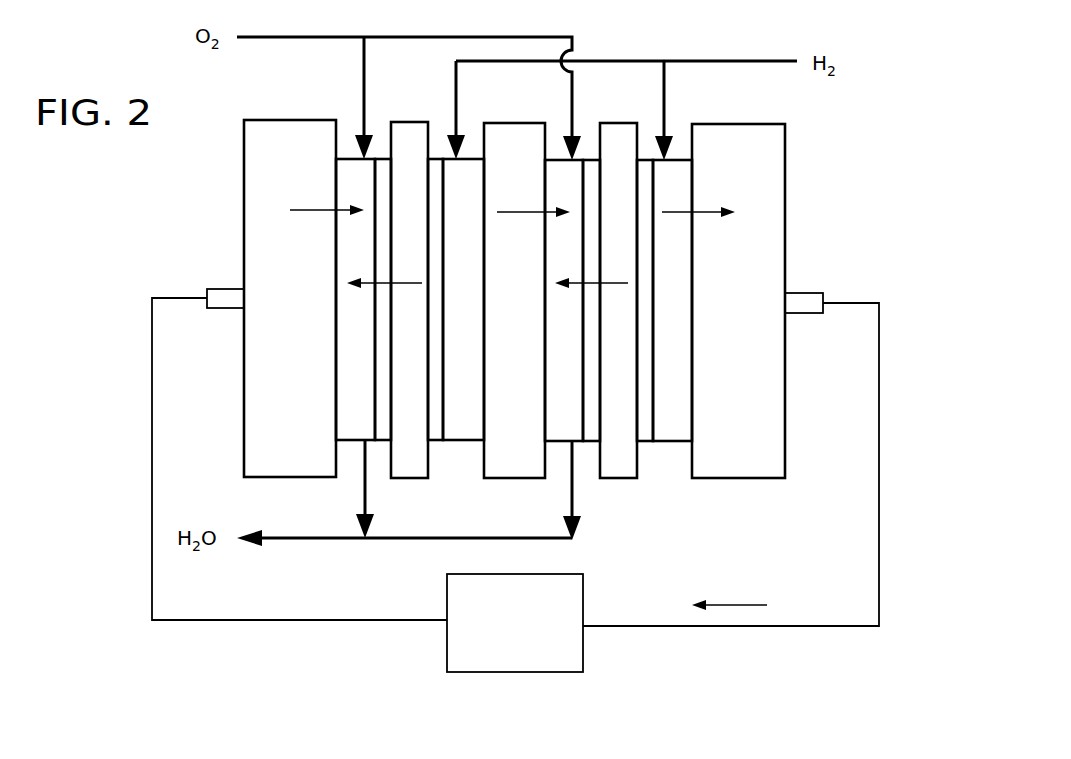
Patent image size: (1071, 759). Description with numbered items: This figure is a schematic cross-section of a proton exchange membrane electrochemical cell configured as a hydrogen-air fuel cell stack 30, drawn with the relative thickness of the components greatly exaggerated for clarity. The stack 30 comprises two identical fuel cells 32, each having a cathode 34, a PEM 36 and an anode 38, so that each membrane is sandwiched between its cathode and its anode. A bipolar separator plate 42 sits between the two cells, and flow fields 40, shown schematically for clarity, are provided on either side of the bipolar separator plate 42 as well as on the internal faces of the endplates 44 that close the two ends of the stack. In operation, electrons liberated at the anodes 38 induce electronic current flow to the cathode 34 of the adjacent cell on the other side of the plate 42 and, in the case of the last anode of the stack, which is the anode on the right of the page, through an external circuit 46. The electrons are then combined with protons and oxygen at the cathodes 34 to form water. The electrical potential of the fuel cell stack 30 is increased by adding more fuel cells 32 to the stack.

The hydrogen-air fuel cell stack 30 is at (199, 216).
The fuel cell 32 is at (440, 492).
The cathode 34 is at (375, 365).
The PEM 36 is at (410, 121).
The anode 38 is at (444, 367).
The flow field 40 is at (372, 403).
The bipolar separator plate 42 is at (527, 403).
The endplate 44 is at (304, 403).
The external circuit 46 is at (879, 542).